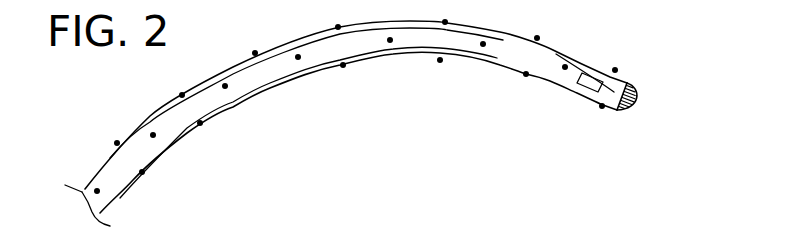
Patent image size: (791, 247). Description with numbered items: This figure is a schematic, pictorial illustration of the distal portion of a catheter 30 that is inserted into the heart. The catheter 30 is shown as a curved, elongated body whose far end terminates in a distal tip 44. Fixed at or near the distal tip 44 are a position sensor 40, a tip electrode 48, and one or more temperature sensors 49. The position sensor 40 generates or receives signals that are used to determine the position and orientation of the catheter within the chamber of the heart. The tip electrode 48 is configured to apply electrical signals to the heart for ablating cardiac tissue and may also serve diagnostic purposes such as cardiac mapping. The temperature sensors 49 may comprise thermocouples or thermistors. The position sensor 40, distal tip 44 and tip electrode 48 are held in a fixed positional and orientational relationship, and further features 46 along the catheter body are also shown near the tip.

The catheter 30 is at (246, 73).
The position sensor 40 is at (592, 82).
The distal tip 44 is at (637, 106).
The protrusion 46 is at (614, 71).
The tip electrode 48 is at (626, 112).
The temperature sensors 49 is at (636, 85).